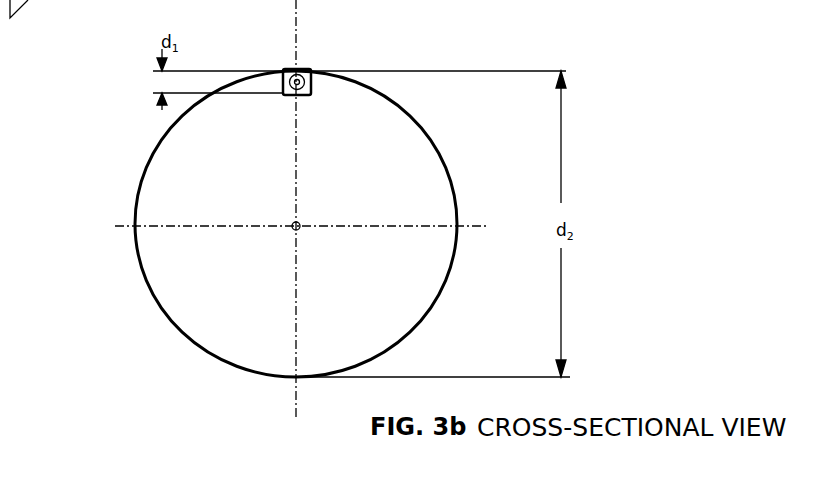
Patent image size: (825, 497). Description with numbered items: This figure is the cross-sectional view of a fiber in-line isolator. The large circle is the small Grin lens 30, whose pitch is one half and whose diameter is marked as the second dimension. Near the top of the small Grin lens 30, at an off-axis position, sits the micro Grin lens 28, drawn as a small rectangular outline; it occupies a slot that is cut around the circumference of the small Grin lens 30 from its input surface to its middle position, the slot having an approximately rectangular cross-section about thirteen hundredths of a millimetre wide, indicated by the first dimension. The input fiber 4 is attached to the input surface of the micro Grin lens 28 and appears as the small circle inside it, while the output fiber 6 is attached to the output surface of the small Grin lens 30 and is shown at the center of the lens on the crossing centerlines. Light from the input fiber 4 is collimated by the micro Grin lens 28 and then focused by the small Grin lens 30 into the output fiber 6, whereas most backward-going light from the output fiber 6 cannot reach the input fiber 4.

The input fiber 4 is at (304, 74).
The micro Grin lens 28 is at (311, 82).
The small Grin lens 30 is at (432, 130).
The output fiber 6 is at (291, 228).